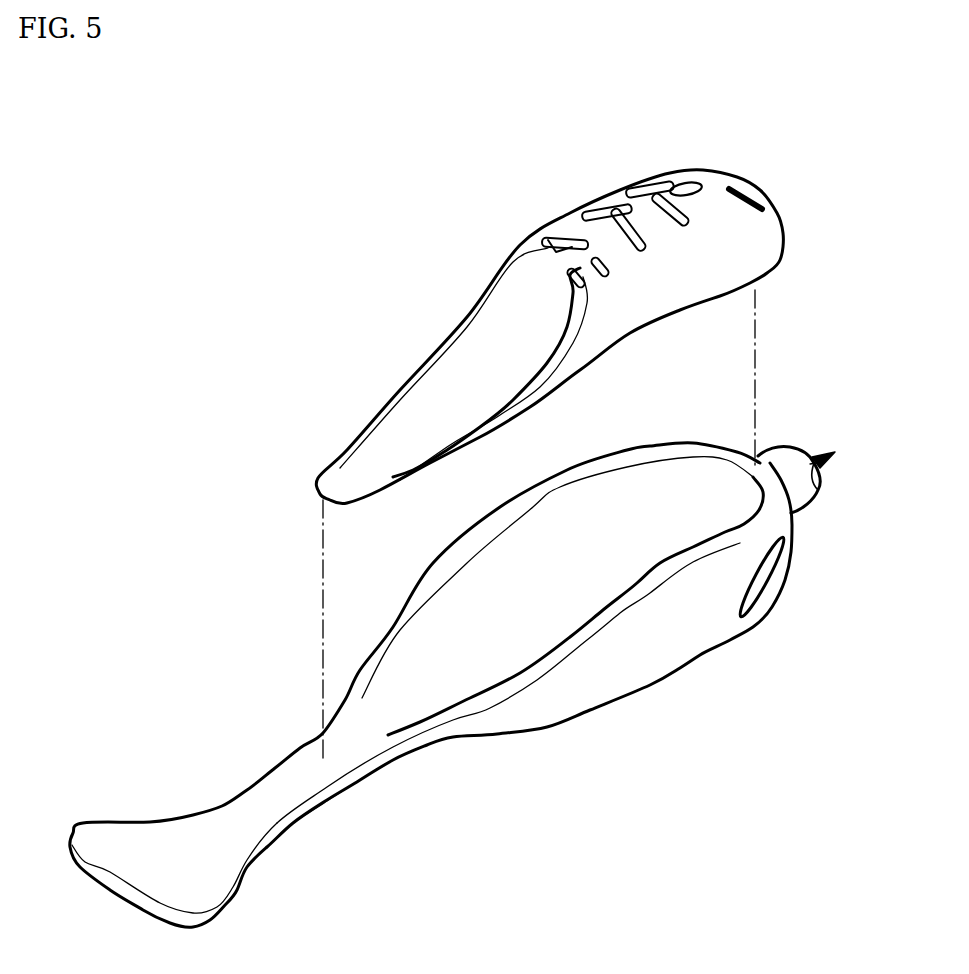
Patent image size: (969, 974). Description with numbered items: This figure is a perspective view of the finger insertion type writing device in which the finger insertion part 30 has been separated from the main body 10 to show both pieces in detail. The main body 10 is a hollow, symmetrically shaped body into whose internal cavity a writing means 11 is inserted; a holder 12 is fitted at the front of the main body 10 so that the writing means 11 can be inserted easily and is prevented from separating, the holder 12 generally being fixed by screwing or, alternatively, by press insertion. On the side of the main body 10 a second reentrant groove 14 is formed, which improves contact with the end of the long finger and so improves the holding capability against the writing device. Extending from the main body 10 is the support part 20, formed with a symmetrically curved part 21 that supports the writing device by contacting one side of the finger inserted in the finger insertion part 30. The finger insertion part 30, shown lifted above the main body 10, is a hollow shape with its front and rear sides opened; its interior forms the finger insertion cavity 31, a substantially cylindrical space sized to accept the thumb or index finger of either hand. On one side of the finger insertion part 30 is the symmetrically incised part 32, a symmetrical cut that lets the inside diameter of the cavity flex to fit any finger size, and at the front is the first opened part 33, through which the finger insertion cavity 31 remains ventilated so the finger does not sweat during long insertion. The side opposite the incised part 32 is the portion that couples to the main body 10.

The main body 10 is at (653, 657).
The writing means 11 is at (836, 456).
The holder 12 is at (787, 468).
The second reentrant groove 14 is at (763, 577).
The support part 20 is at (143, 860).
The symmetrically curved part 21 is at (323, 793).
The finger insertion part 30 is at (533, 257).
The finger insertion cavity 31 is at (470, 375).
The symmetrically incised part 32 is at (614, 226).
The first opened part 33 is at (727, 190).